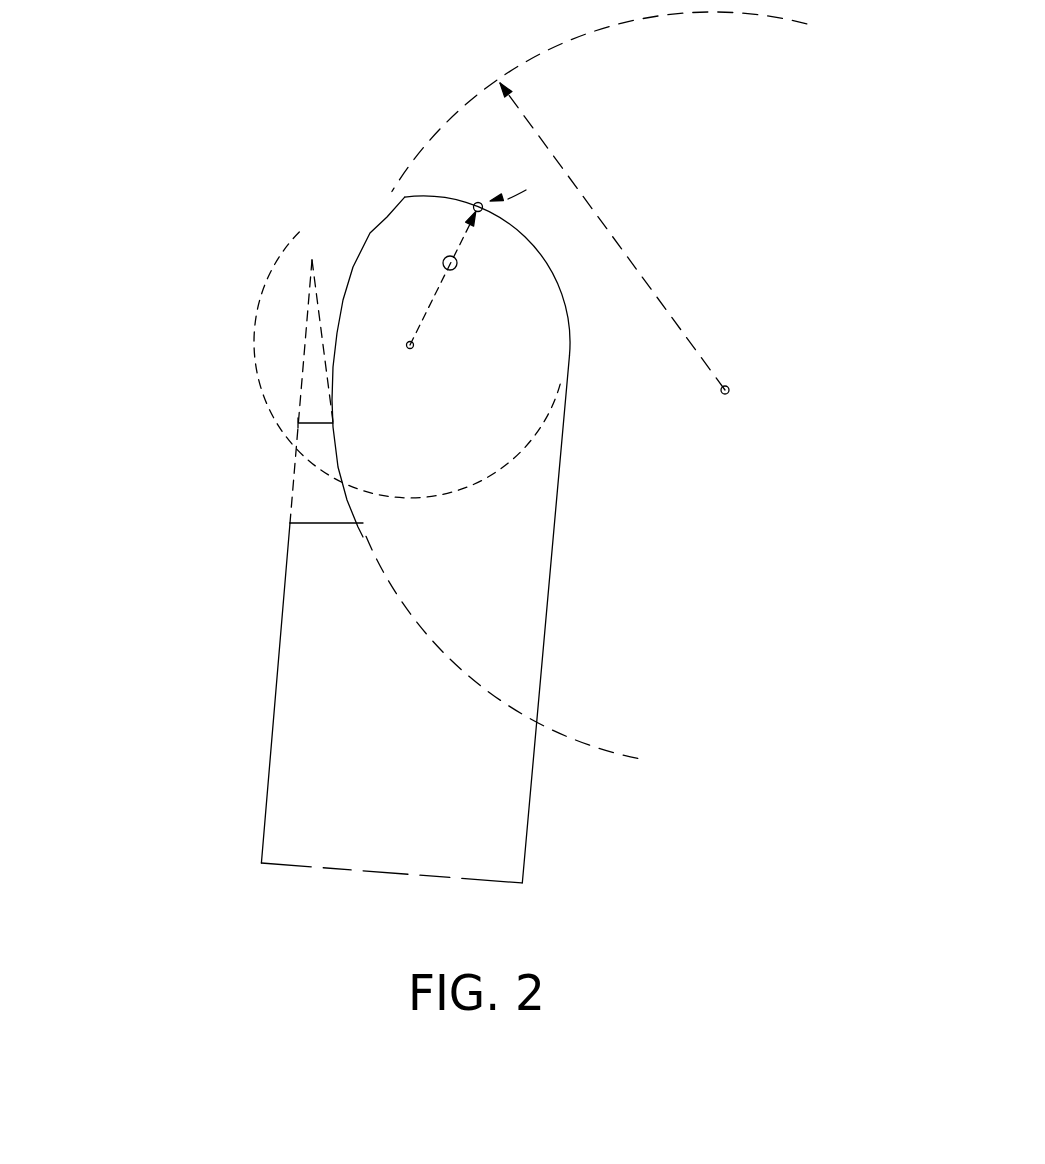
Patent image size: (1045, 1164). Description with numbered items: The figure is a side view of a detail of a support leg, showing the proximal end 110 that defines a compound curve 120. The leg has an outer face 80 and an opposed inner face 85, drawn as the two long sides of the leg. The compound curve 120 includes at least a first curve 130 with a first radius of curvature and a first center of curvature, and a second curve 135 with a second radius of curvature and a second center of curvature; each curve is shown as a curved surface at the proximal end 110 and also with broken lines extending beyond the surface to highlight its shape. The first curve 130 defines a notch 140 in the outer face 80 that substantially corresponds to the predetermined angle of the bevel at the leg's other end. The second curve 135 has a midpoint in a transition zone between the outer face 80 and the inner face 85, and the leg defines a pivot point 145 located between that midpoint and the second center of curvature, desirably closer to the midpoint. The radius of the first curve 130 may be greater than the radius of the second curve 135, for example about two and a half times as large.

The outer face 80 is at (268, 763).
The inner face 85 is at (560, 482).
The proximal end 110 is at (434, 447).
The compound curve 120 is at (491, 388).
The first curve 130 is at (377, 220).
The second curve 135 is at (252, 342).
The notch 140 is at (252, 494).
The pivot point 145 is at (456, 269).